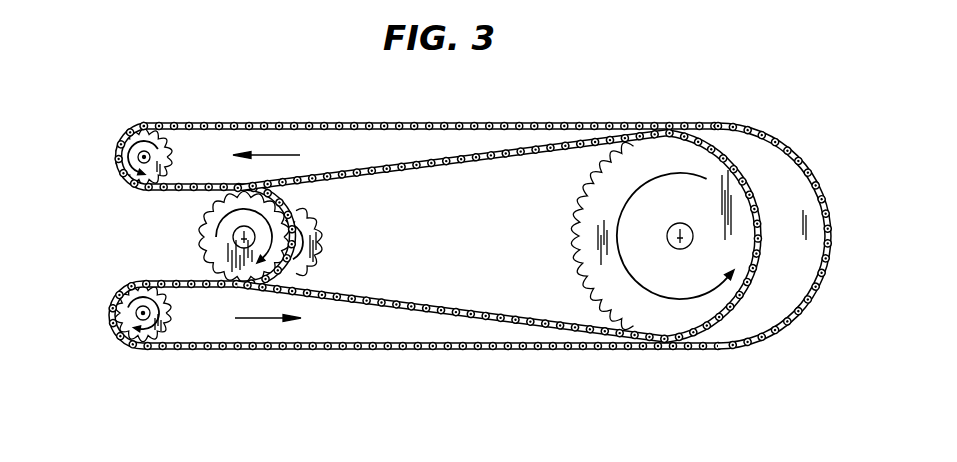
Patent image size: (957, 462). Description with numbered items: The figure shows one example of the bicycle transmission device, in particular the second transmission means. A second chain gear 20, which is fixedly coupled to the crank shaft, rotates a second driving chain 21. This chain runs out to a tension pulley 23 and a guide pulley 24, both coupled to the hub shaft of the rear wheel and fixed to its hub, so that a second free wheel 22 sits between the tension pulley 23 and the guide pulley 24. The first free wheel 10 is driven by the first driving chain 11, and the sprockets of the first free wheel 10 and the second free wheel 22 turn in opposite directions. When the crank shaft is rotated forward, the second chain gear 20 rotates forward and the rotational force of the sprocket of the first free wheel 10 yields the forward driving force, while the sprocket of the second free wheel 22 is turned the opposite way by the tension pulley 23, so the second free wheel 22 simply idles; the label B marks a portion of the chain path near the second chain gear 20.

The first free wheel 10 is at (332, 236).
The first driving chain 11 is at (402, 303).
The second chain gear 20 is at (683, 320).
The second driving chain 21 is at (488, 350).
The second free wheel 22 is at (202, 236).
The tension pulley 23 is at (112, 152).
The guide pulley 24 is at (117, 332).
The chain section B is at (812, 298).